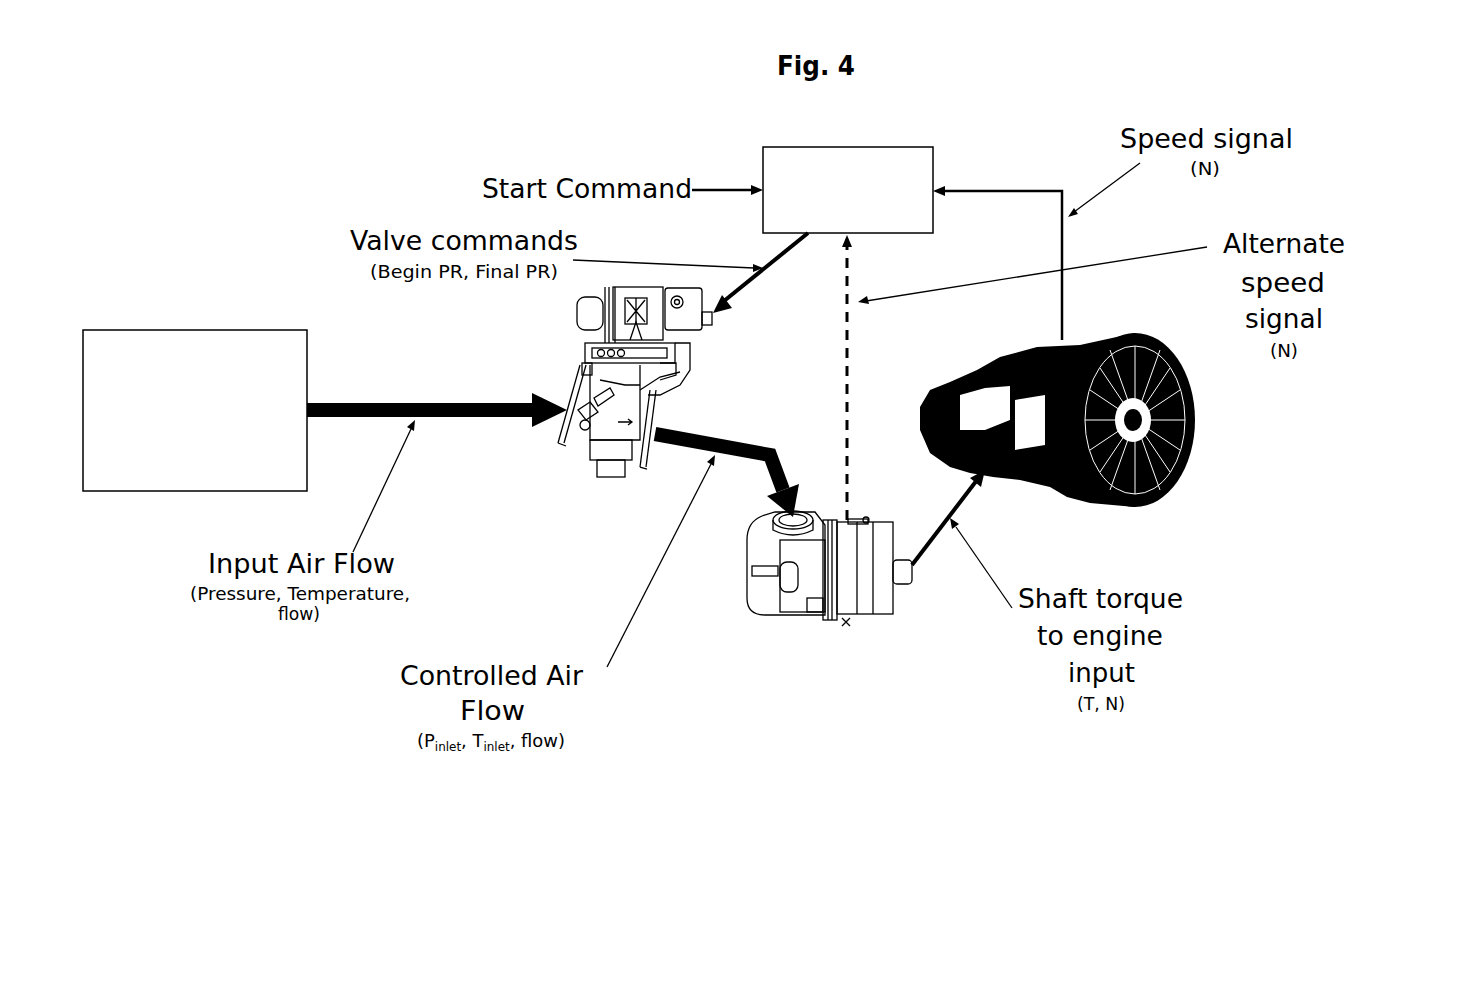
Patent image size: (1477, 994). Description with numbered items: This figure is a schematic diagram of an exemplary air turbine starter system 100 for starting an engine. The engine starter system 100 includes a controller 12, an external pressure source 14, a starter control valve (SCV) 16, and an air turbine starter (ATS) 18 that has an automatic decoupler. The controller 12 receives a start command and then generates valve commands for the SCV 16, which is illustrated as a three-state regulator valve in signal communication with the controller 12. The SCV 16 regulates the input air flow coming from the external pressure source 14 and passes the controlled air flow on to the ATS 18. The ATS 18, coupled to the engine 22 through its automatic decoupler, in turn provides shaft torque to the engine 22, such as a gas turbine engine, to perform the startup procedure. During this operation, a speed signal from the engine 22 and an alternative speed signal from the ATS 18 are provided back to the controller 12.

The air turbine starter system 100 is at (941, 80).
The controller 12 is at (848, 190).
The external pressure source 14 is at (195, 410).
The starter control valve (SCV) 16 is at (577, 452).
The air turbine starter (ATS) 18 is at (832, 640).
The engine 22 is at (1207, 437).